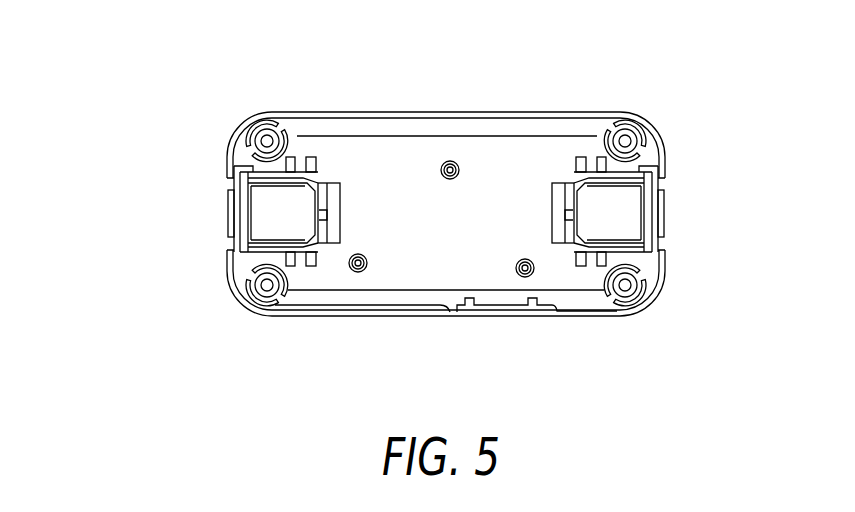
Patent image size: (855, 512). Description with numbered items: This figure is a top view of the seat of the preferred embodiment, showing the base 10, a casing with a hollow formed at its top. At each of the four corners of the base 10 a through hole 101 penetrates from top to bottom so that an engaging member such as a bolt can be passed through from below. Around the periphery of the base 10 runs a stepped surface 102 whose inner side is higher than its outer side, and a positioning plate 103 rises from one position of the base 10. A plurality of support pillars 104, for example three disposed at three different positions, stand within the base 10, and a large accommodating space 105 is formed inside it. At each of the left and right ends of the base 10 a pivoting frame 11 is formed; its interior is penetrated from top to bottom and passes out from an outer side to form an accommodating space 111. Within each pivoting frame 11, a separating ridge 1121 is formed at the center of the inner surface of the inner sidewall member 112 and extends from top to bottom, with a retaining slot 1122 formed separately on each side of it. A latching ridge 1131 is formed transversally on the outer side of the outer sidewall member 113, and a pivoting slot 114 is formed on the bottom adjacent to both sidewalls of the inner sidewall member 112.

The base 10 is at (665, 134).
The through hole 101 is at (266, 134).
The stepped surface 102 is at (424, 311).
The positioning plate 103 is at (482, 308).
The support pillar 104 is at (450, 160).
The accommodating space 105 is at (489, 185).
The pivoting frame 11 is at (232, 183).
The accommodating space 111 is at (268, 228).
The inner sidewall member 112 is at (334, 220).
The separating ridge 1121 is at (322, 183).
The retaining slot 1122 is at (326, 185).
The outer sidewall member 113 is at (245, 193).
The latching ridge 1131 is at (232, 220).
The pivoting slot 114 is at (303, 170).